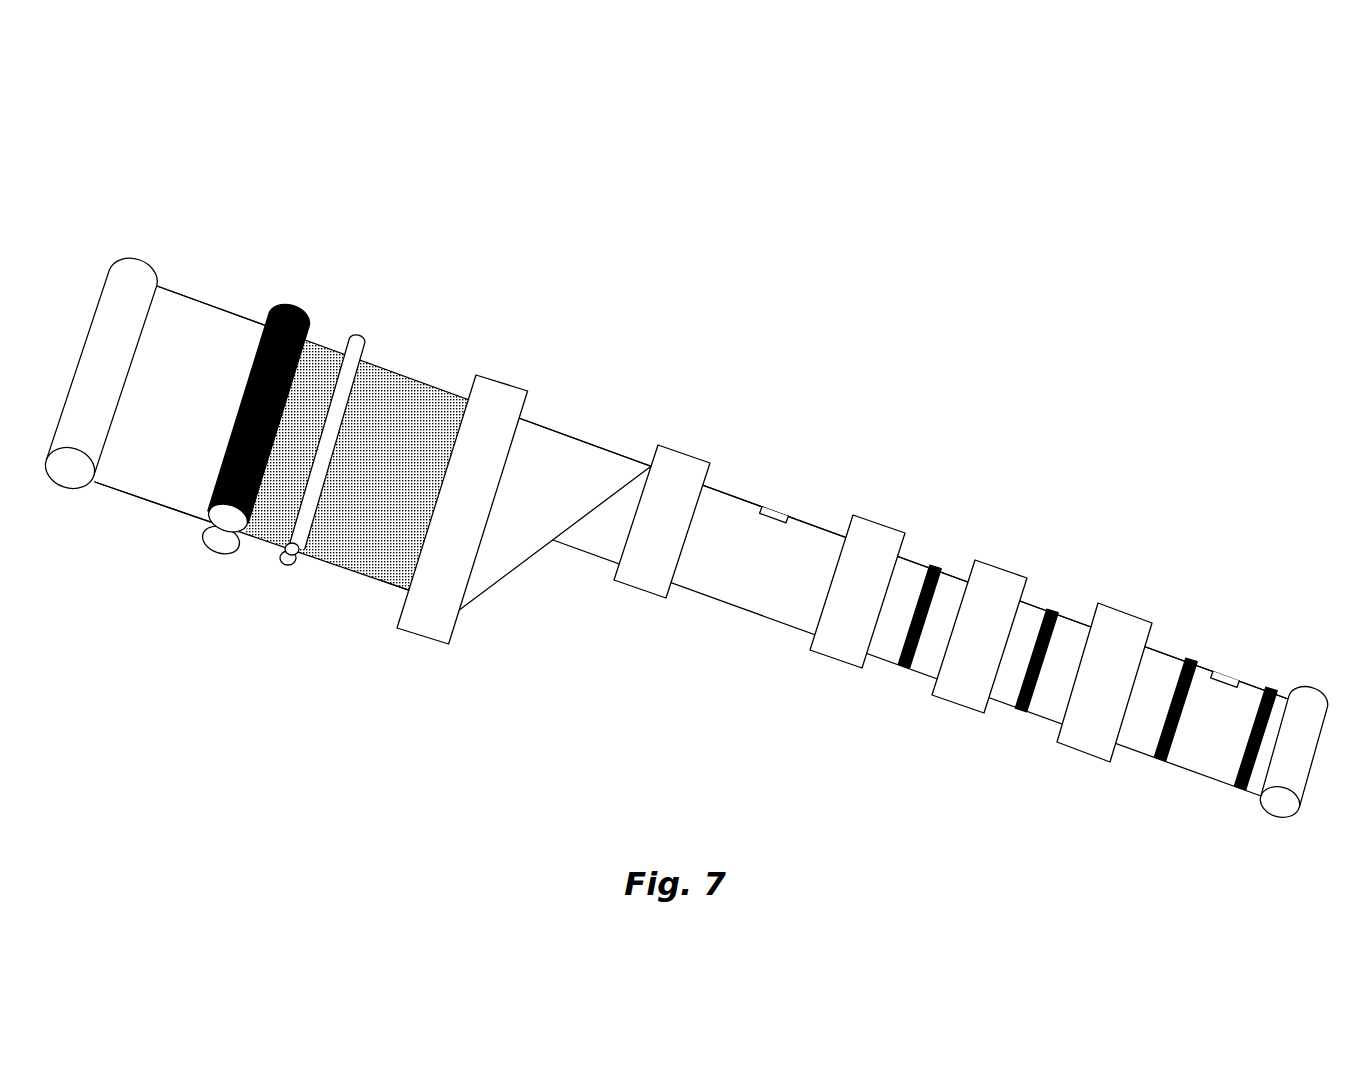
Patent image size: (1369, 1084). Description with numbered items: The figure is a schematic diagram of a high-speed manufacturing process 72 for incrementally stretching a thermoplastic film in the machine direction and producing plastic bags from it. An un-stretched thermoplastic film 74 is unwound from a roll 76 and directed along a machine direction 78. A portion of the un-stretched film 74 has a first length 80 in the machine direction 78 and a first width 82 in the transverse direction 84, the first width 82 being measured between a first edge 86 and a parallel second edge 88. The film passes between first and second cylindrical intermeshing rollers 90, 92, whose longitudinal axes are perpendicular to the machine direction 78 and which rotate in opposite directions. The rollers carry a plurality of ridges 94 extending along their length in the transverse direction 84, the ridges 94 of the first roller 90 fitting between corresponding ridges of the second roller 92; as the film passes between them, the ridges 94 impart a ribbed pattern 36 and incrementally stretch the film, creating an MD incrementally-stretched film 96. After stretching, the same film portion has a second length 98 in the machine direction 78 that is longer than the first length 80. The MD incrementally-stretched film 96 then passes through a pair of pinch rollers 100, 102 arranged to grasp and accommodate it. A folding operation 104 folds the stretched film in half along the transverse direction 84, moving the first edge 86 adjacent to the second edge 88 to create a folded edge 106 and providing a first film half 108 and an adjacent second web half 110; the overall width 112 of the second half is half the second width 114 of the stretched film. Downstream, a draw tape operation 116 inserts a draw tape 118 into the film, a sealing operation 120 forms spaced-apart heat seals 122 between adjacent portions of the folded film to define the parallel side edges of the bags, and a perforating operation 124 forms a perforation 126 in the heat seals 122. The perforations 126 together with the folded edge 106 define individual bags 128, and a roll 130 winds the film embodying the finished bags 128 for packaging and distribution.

The ribbed pattern 36 is at (375, 357).
The high-speed manufacturing process 72 is at (363, 247).
The un-stretched thermoplastic film 74 is at (170, 291).
The roll 76 is at (143, 258).
The machine direction 78 is at (758, 690).
The first length 80 is at (85, 498).
The first width 82 is at (118, 490).
The transverse direction 84 is at (77, 307).
The first edge 86 is at (160, 505).
The second edge 88 is at (231, 313).
The first cylindrical intermeshing roller 90 is at (231, 546).
The second cylindrical intermeshing roller 92 is at (217, 555).
The ridges 94 is at (305, 316).
The MD incrementally-stretched film 96 is at (381, 590).
The second length 98 is at (397, 257).
The first pinch roller 100 is at (302, 560).
The second pinch roller 102 is at (291, 567).
The folding operation 104 is at (375, 658).
The folded edge 106 is at (567, 548).
The first film half 108 is at (557, 432).
The second web half 110 is at (603, 530).
The overall width 112 is at (744, 500).
The second width 114 is at (441, 605).
The draw tape operation 116 is at (690, 455).
The draw tape 118 is at (776, 510).
The sealing operation 120 is at (835, 650).
The heat seals 122 is at (906, 665).
The perforating operation 124 is at (963, 697).
The perforation 126 is at (1053, 610).
The individual bags 128 is at (1200, 768).
The roll 130 is at (1310, 700).